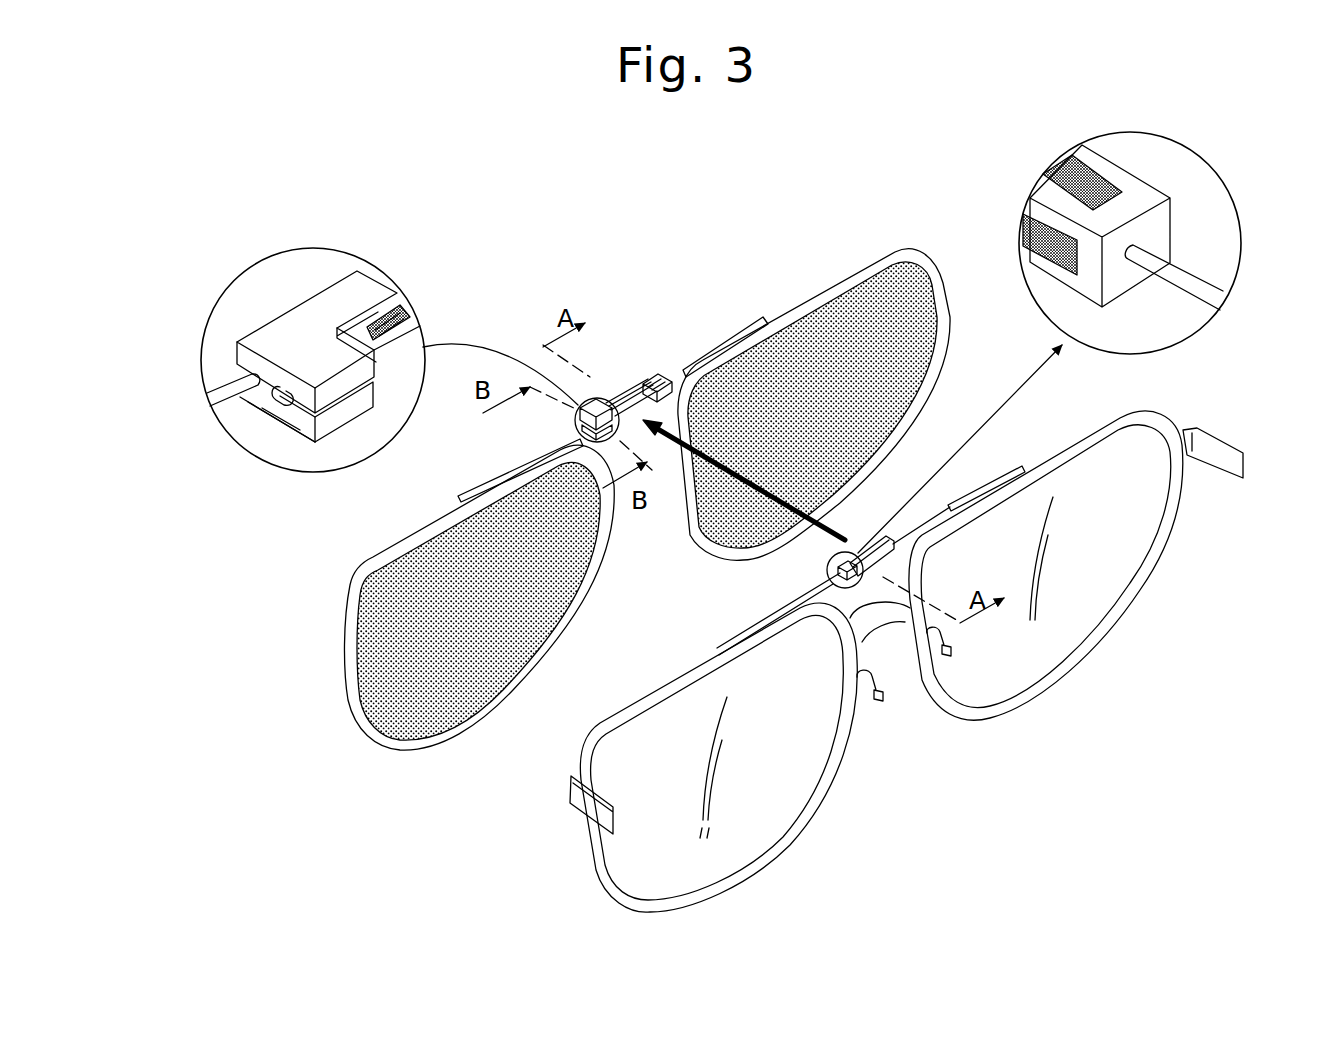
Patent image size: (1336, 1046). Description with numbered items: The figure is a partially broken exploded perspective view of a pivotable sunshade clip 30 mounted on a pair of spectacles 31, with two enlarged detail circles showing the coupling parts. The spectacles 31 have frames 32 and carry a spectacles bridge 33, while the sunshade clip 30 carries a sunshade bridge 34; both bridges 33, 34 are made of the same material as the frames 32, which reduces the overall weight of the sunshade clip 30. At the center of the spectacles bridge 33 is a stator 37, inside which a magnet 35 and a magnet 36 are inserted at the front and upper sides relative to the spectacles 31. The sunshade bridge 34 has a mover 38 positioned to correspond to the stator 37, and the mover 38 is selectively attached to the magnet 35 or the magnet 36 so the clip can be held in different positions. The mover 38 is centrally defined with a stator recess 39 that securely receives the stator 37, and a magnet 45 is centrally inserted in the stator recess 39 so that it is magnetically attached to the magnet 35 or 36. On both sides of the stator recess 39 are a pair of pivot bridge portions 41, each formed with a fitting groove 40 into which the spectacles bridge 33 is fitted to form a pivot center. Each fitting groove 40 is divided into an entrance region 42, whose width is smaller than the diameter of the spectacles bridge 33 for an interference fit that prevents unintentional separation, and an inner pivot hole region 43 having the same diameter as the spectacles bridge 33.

The pivotable sunshade clip 30 is at (360, 517).
The spectacles 31 is at (857, 757).
The frames 32 is at (803, 823).
The spectacles bridge 33 is at (1183, 283).
The sunshade bridge 34 is at (208, 399).
The magnet 35 is at (1058, 165).
The magnet 36 is at (1025, 222).
The stator 37 is at (1143, 200).
The mover 38 is at (282, 282).
The stator recess 39 is at (378, 305).
The fitting grooves 40 is at (178, 503).
The pivot bridge portions 41 is at (338, 420).
The entrance region 42 is at (303, 413).
The pivot hole region 43 is at (280, 396).
The magnet 45 is at (397, 313).